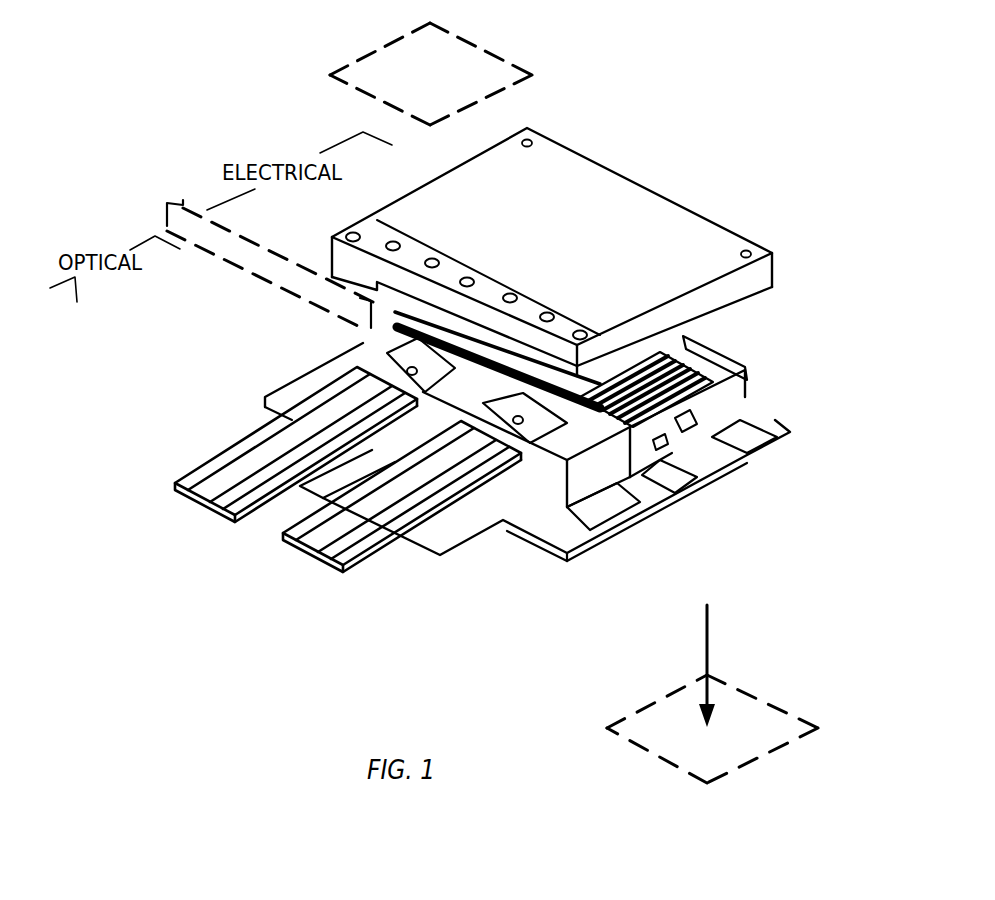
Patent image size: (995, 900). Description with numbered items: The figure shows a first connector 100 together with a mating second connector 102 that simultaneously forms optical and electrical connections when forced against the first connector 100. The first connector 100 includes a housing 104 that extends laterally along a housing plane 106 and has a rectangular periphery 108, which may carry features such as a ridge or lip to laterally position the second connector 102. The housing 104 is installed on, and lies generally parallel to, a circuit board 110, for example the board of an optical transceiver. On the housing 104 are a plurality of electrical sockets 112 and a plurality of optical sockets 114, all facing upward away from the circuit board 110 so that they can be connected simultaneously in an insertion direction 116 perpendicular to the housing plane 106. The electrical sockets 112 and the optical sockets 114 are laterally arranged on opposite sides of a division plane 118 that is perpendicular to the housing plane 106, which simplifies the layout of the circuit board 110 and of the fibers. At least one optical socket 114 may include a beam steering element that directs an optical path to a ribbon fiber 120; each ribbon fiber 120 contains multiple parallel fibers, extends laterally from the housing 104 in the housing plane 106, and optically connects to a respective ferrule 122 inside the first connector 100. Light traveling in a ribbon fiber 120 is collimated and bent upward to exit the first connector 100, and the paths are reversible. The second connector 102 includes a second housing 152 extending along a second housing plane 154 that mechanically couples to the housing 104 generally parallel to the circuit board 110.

The first connector 100 is at (222, 594).
The second connector 102 is at (552, 230).
The housing 104 is at (733, 385).
The housing plane 106 is at (670, 730).
The rectangular periphery 108 is at (713, 343).
The circuit board 110 is at (572, 528).
The electrical sockets 112 is at (705, 385).
The optical sockets 114 is at (453, 360).
The insertion direction 116 is at (707, 622).
The division plane 118 is at (183, 204).
The ribbon fiber 120 is at (205, 507).
The ferrule 122 is at (470, 389).
The second housing 152 is at (572, 200).
The second housing plane 154 is at (395, 77).